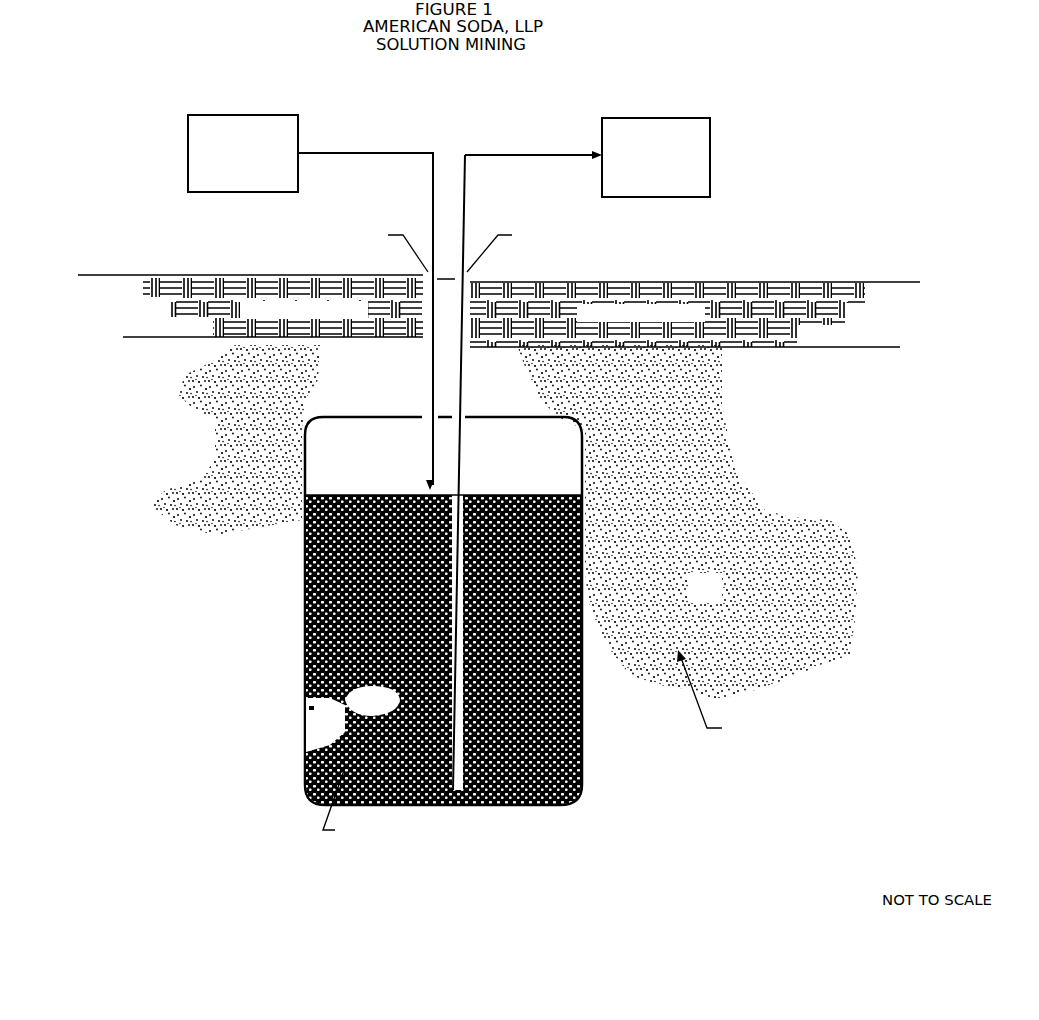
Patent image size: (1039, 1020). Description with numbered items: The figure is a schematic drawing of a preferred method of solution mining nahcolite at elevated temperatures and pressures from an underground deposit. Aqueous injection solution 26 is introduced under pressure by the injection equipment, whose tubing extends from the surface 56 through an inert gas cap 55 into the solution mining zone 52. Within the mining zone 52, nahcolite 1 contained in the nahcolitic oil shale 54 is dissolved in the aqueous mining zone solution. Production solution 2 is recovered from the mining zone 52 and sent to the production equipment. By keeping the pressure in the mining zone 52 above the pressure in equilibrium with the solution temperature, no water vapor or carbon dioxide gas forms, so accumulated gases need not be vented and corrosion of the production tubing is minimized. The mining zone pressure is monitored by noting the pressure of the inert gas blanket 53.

The nahcolite 1 is at (318, 726).
The production solution 2 is at (581, 454).
The aqueous injection solution 26 is at (311, 302).
The solution mining zone 52 is at (443, 676).
The inert gas blanket 53 is at (443, 467).
The nahcolitic oil shale 54 is at (504, 550).
The inert gas cap 55 is at (504, 312).
The surface 56 is at (499, 301).